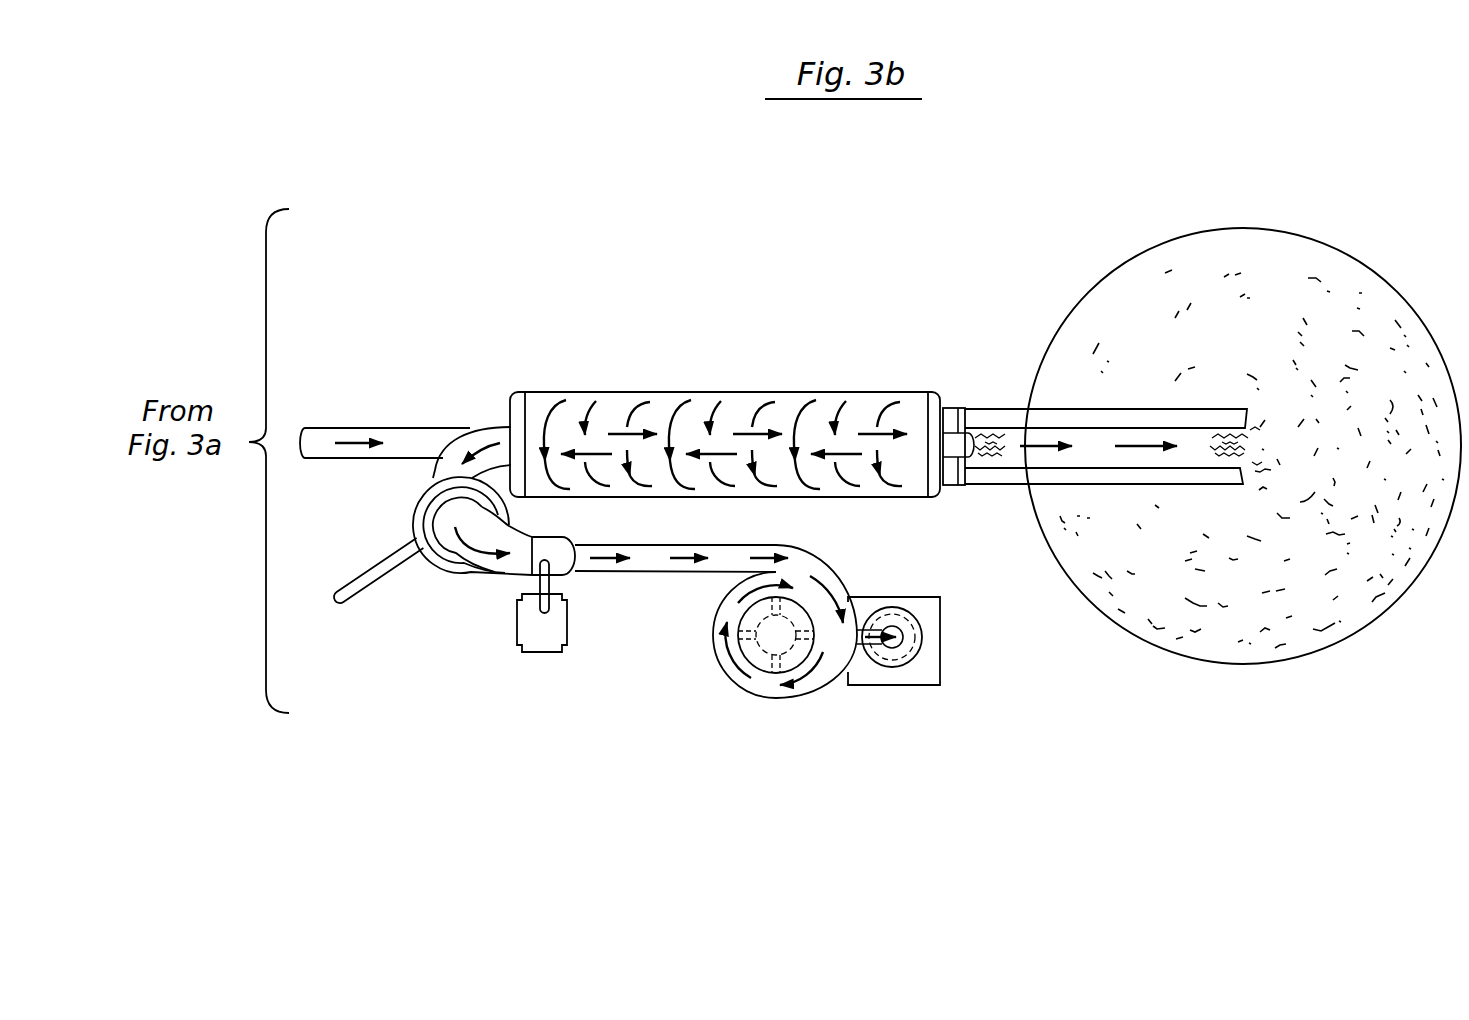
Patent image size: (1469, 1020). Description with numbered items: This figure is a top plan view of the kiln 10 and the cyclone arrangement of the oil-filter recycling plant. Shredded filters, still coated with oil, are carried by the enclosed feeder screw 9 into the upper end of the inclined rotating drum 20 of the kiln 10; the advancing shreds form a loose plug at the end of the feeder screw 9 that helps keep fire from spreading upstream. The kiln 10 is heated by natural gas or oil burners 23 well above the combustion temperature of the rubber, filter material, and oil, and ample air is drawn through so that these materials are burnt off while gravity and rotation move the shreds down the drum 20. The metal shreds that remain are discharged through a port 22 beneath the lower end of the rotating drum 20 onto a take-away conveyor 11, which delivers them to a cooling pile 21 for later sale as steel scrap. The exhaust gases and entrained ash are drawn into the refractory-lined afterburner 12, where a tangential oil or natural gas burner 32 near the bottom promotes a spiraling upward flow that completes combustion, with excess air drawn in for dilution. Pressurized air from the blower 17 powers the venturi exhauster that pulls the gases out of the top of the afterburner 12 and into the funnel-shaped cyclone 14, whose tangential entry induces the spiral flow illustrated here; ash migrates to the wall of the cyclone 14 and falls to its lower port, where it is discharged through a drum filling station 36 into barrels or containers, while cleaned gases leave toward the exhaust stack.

The feeder screw 9 is at (378, 428).
The kiln 10 is at (720, 392).
The rotating drum 20 is at (620, 396).
The port 22 is at (961, 487).
The burners 23 is at (950, 407).
The take-away conveyor 11 is at (1103, 455).
The cooling pile 21 is at (1258, 350).
The afterburner 12 is at (412, 518).
The burner 32 is at (368, 592).
The blower 17 is at (542, 653).
The cyclone 14 is at (753, 690).
The drum filling station 36 is at (905, 658).